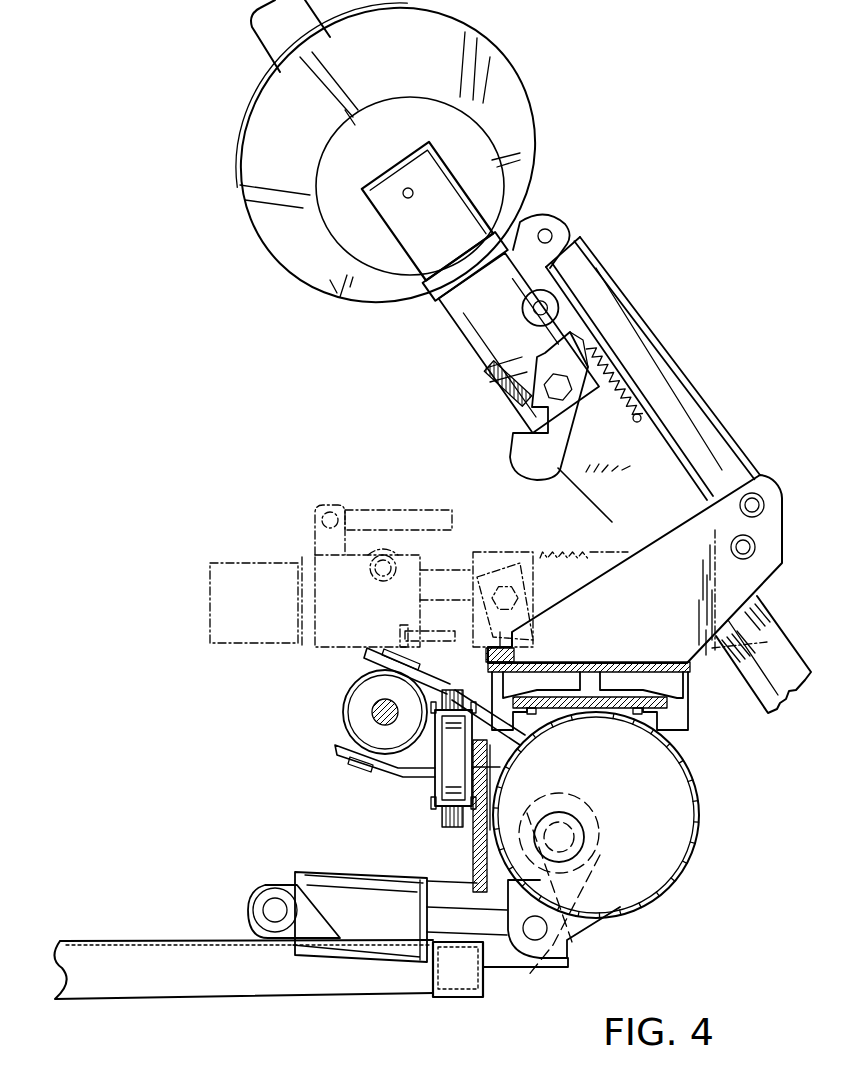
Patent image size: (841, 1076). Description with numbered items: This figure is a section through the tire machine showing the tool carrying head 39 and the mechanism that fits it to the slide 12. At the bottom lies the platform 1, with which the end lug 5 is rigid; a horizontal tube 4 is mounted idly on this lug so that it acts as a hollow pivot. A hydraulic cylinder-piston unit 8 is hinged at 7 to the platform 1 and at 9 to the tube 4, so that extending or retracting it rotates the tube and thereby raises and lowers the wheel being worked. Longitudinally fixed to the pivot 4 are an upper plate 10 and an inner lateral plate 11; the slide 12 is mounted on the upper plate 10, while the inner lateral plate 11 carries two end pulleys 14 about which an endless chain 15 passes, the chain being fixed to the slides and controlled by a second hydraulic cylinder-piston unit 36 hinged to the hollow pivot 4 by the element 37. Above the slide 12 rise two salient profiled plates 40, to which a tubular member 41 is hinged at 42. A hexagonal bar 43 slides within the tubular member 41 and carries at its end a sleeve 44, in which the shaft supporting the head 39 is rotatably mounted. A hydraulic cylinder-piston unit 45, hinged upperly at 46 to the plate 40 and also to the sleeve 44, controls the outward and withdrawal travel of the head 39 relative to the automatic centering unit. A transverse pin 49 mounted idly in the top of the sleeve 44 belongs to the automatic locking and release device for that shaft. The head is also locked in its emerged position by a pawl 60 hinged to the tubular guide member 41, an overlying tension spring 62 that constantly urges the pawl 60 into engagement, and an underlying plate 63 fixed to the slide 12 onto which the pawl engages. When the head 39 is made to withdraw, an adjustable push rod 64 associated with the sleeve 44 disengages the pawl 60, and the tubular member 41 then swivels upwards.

The platform 1 is at (146, 938).
The horizontal tube 4 is at (684, 876).
The end lug 5 is at (547, 968).
The hinge 7 is at (278, 896).
The hydraulic cylinder-piston unit 8 is at (341, 870).
The hinge 9 is at (550, 938).
The upper plate 10 is at (638, 712).
The inner lateral plate 11 is at (505, 762).
The slide 12 is at (672, 678).
The end pulley 14 is at (440, 806).
The endless chain 15 is at (455, 828).
The hydraulic cylinder-piston unit 36 is at (344, 707).
The hinge element 37 is at (411, 771).
The tool carrying head 39 is at (470, 188).
The salient profiled plate 40 is at (656, 603).
The tubular member 41 is at (602, 498).
The hinge 42 is at (731, 549).
The hexagonal bar 43 is at (762, 690).
The sleeve 44 is at (466, 318).
The hydraulic cylinder-piston unit 45 is at (625, 302).
The hinge 46 is at (759, 494).
The transverse pin 49 is at (550, 295).
The pawl 60 is at (515, 456).
The tension spring 62 is at (601, 388).
The plate 63 is at (502, 655).
The adjustable push rod 64 is at (488, 372).